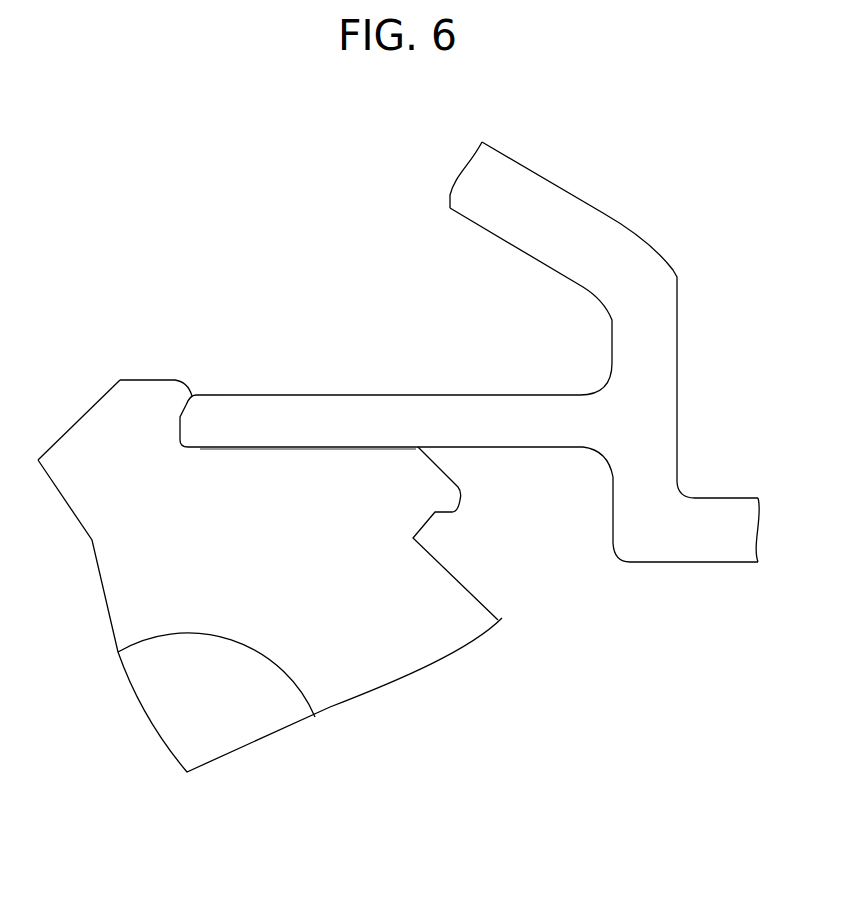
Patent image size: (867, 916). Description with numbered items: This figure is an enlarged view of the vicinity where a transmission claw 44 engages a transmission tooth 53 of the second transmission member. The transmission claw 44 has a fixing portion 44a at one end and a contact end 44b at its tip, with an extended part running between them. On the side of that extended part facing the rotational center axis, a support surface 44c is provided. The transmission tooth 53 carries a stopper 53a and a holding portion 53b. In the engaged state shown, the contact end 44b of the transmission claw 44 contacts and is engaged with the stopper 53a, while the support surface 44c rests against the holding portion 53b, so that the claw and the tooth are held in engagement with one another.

The transmission claw 44 is at (422, 417).
The fixing portion 44a is at (572, 415).
The contact end 44b is at (192, 423).
The support surface 44c is at (305, 447).
The transmission tooth 53 is at (143, 407).
The stopper 53a is at (172, 432).
The holding portion 53b is at (273, 455).